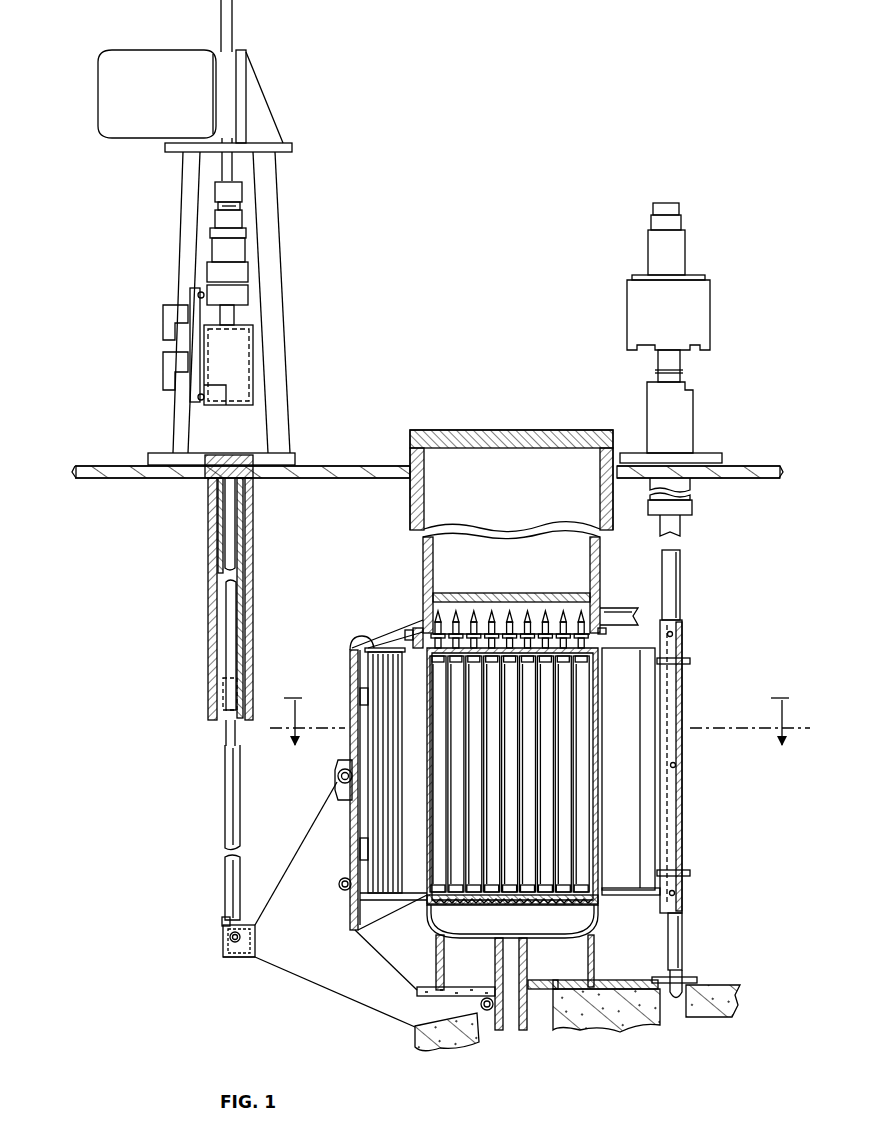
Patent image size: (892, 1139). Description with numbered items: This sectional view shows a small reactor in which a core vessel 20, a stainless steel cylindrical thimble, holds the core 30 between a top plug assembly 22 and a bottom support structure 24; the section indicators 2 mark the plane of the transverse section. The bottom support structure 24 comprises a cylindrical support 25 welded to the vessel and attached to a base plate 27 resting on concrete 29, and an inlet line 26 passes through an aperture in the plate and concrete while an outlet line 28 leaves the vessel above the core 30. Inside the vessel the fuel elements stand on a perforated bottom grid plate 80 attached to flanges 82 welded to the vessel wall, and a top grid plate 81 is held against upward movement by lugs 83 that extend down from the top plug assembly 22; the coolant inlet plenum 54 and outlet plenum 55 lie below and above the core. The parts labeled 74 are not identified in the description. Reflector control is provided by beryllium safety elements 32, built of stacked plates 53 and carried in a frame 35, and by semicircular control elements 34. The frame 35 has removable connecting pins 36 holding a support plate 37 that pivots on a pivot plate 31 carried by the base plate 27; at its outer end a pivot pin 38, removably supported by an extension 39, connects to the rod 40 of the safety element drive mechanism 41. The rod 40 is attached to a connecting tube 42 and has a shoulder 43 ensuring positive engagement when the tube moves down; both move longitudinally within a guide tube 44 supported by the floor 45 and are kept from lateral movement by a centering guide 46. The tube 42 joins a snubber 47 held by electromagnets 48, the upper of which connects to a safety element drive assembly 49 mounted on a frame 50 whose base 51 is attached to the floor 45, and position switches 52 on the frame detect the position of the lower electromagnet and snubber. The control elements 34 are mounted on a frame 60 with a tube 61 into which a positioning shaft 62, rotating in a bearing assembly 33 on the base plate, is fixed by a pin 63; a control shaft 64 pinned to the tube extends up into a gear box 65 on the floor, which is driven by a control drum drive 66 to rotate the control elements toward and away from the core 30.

The section line 2- 2 is at (540, 711).
The core vessel 20 is at (600, 582).
The top plug assembly 22 is at (511, 481).
The bottom support structure 24 is at (596, 973).
The cylindrical support 25 is at (436, 955).
The inlet line 26 is at (514, 975).
The base plate 27 is at (712, 987).
The outlet line 28 is at (609, 610).
The concrete 29 is at (432, 1040).
The core 30 is at (574, 775).
The pivot plate 31 is at (494, 1012).
The safety elements 32 is at (348, 656).
The bearing assembly 33 is at (683, 975).
The control elements 34 is at (668, 722).
The frame 35 is at (378, 646).
The connecting pins 36 is at (337, 776).
The support plate 37 is at (315, 836).
The pivot pin 38 is at (226, 939).
The extension 39 is at (230, 958).
The rod 40 is at (228, 893).
The safety element drive mechanism 41 is at (295, 372).
The connecting tube 42 is at (226, 556).
The shoulder 43 is at (240, 728).
The guide tube 44 is at (250, 541).
The floor 45 is at (427, 486).
The centering guide 46 is at (243, 511).
The snubber 47 is at (236, 356).
The electromagnets 48 is at (252, 246).
The safety element drive assembly 49 is at (162, 58).
The frame 50 is at (186, 203).
The base 51 is at (284, 459).
The position switches 52 is at (165, 314).
The plates 53 is at (388, 727).
The coolant inlet plenum 54 is at (464, 964).
The outlet plenum 55 is at (545, 606).
The frame 60 is at (690, 660).
The tube 61 is at (684, 632).
The positioning shaft 62 is at (684, 928).
The pin 63 is at (676, 622).
The control shaft 64 is at (672, 566).
The gear box 65 is at (683, 420).
The control drum drive 66 is at (700, 292).
The nozzle 74 is at (474, 618).
The bottom grid plate 80 is at (512, 921).
The top grid plate 81 is at (602, 632).
The flanges 82 is at (598, 904).
The lugs 83 is at (436, 608).